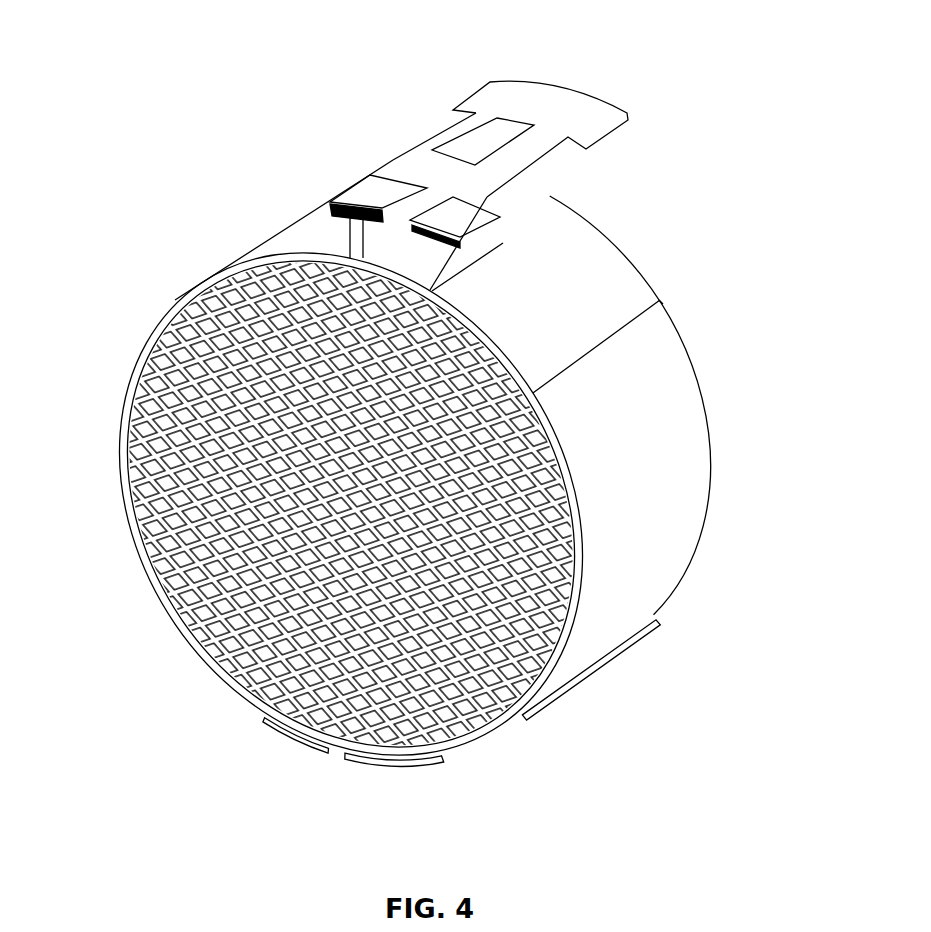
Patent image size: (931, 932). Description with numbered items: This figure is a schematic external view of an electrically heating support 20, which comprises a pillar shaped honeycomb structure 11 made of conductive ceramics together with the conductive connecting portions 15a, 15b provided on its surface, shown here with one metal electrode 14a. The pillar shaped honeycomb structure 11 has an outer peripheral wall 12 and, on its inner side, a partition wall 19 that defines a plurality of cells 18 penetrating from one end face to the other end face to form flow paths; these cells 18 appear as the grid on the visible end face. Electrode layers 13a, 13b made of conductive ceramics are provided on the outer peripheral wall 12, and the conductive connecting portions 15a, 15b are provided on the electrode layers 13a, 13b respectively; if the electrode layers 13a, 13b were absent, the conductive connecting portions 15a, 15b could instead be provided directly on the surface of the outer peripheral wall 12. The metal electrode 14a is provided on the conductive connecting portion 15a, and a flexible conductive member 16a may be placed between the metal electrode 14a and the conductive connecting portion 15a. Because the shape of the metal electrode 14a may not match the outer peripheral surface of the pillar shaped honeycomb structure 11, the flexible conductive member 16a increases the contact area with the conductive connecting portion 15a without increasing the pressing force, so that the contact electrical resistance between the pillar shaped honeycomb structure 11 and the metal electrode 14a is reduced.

The pillar shaped honeycomb structure 11 is at (708, 489).
The outer peripheral wall 12 is at (677, 413).
The electrode layer 13a is at (621, 277).
The electrode layer 13b is at (583, 682).
The metal electrode 14a is at (492, 100).
The conductive connecting portion 15a is at (552, 194).
The conductive connecting portion 15b is at (425, 768).
The flexible conductive member 16a is at (477, 227).
The cells 18 is at (167, 437).
The partition wall 19 is at (177, 385).
The electrically heating support 20 is at (260, 216).